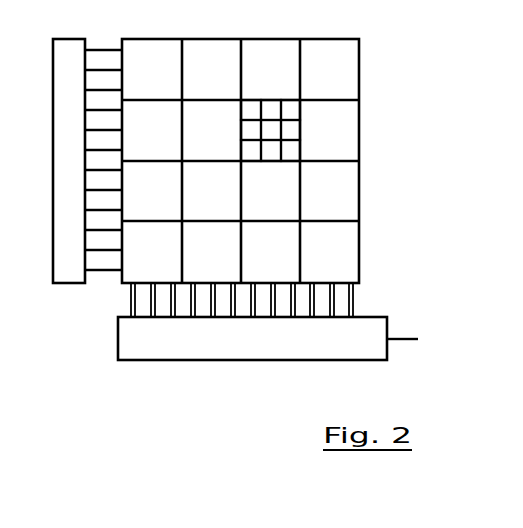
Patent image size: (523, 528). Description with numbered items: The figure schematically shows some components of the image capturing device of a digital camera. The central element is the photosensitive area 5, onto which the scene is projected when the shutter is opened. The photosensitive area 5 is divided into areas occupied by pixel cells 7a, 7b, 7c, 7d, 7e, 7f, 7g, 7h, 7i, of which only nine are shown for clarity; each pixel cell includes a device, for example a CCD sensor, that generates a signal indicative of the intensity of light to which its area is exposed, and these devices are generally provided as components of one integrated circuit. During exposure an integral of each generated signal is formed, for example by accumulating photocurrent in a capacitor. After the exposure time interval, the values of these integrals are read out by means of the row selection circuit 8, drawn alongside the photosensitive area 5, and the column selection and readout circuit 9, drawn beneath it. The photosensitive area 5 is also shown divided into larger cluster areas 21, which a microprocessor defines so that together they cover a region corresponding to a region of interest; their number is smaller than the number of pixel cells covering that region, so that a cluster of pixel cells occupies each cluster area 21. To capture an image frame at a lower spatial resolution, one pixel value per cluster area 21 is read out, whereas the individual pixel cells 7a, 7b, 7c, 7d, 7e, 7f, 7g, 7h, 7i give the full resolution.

The photosensitive area 5 is at (391, 25).
The row selection circuit 8 is at (67, 58).
The cluster area 21 is at (210, 62).
The pixel cell 7a is at (253, 110).
The pixel cell 7b is at (274, 109).
The pixel cell 7c is at (294, 109).
The pixel cell 7d is at (252, 132).
The pixel cell 7e is at (272, 133).
The pixel cell 7f is at (291, 133).
The pixel cell 7g is at (256, 150).
The pixel cell 7h is at (272, 152).
The pixel cell 7i is at (291, 153).
The column selection and readout circuit 9 is at (367, 338).